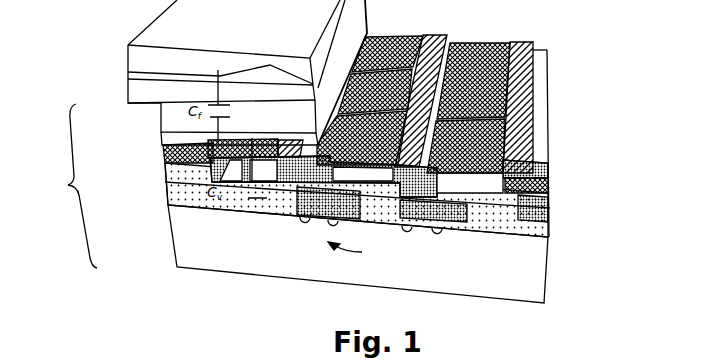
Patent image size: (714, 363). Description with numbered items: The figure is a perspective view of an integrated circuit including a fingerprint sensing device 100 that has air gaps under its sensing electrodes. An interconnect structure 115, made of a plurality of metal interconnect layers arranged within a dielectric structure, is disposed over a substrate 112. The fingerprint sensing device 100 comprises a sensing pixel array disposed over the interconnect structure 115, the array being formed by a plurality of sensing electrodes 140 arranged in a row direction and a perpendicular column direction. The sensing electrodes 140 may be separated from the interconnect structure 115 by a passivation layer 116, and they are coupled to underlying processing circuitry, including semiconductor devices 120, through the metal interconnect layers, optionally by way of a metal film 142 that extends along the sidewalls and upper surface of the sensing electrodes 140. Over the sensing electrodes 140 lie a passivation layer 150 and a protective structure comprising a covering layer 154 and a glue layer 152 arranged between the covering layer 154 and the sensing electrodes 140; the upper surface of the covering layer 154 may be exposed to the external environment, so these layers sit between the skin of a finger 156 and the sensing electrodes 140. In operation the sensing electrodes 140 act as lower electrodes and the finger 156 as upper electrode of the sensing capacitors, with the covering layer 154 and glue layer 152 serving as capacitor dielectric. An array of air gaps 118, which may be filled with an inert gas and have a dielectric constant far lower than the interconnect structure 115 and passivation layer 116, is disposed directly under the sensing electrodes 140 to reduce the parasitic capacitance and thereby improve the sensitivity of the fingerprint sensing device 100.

The fingerprint sensing device 100 is at (57, 181).
The substrate 112 is at (546, 276).
The interconnect structure 115 is at (552, 210).
The passivation layer 116 is at (552, 188).
The air gaps 118 is at (478, 185).
The semiconductor devices 120 is at (363, 249).
The sensing electrodes 140 is at (503, 128).
The metal film 142 is at (523, 146).
The passivation layer 150 is at (163, 146).
The glue layer 152 is at (163, 121).
The covering layer 154 is at (153, 95).
The finger 156 is at (148, 38).